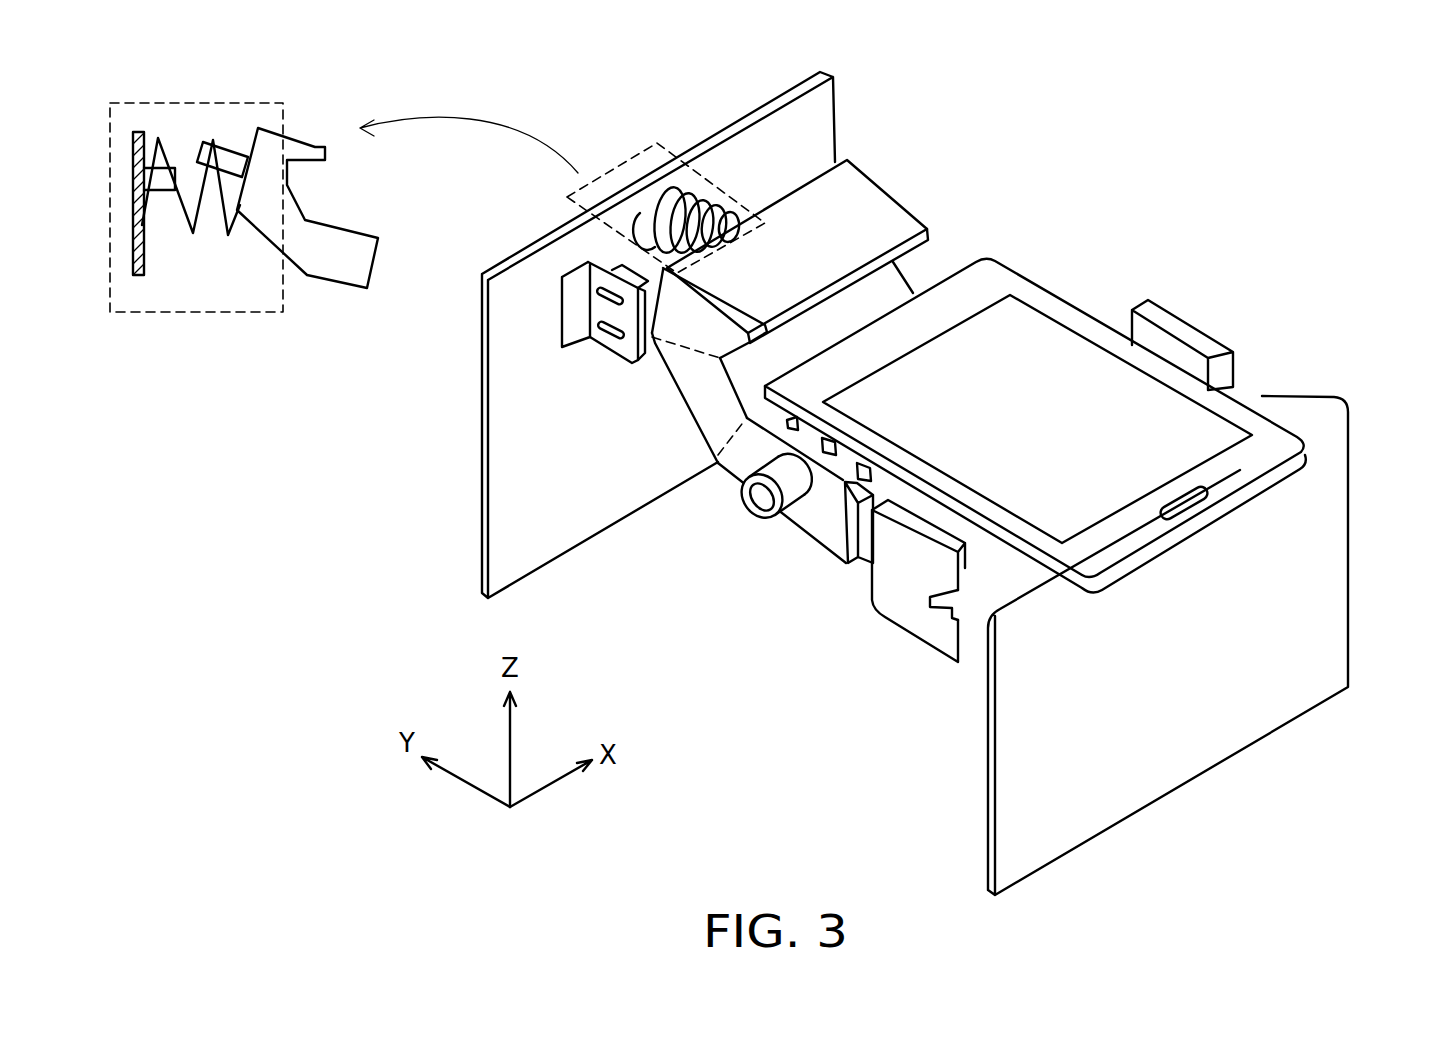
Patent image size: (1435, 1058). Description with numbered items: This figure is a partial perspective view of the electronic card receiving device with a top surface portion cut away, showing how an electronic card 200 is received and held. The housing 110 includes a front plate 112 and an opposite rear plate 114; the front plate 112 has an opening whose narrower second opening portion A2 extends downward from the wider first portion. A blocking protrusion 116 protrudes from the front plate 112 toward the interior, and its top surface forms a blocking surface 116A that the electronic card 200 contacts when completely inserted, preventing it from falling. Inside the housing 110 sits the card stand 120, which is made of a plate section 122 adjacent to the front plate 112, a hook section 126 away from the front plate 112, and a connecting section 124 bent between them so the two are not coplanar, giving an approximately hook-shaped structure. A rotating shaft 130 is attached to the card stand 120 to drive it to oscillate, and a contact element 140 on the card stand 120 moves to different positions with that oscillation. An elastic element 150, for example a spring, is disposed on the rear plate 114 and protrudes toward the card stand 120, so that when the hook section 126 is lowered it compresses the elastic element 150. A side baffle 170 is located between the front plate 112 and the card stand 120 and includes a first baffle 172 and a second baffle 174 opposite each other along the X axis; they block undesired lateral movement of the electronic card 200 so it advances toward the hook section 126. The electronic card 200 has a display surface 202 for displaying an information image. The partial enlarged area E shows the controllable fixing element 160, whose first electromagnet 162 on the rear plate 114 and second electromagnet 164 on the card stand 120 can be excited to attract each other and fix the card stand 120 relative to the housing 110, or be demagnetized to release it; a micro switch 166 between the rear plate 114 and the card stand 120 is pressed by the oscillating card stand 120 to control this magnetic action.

The housing 110 is at (157, 462).
The front plate 112 is at (1078, 645).
The rear plate 114 is at (143, 275).
The blocking protrusion 116 is at (887, 606).
The blocking surface 116A is at (960, 576).
The card stand 120 is at (541, 398).
The plate section 122 is at (782, 515).
The connecting section 124 is at (715, 418).
The hook section 126 is at (685, 323).
The rotating shaft 130 is at (783, 468).
The contact element 140 is at (840, 485).
The elastic element 150 is at (218, 225).
The controllable fixing element 160 is at (157, 590).
The first electromagnet 162 is at (165, 173).
The second electromagnet 164 is at (230, 153).
The micro switch 166 is at (633, 273).
The side baffle 170 is at (997, 376).
The first baffle 172 is at (1190, 333).
The second baffle 174 is at (907, 517).
The electronic card 200 is at (1100, 418).
The display surface 202 is at (1233, 404).
The second opening portion A2 is at (1165, 573).
The partial enlarged area E is at (254, 101).